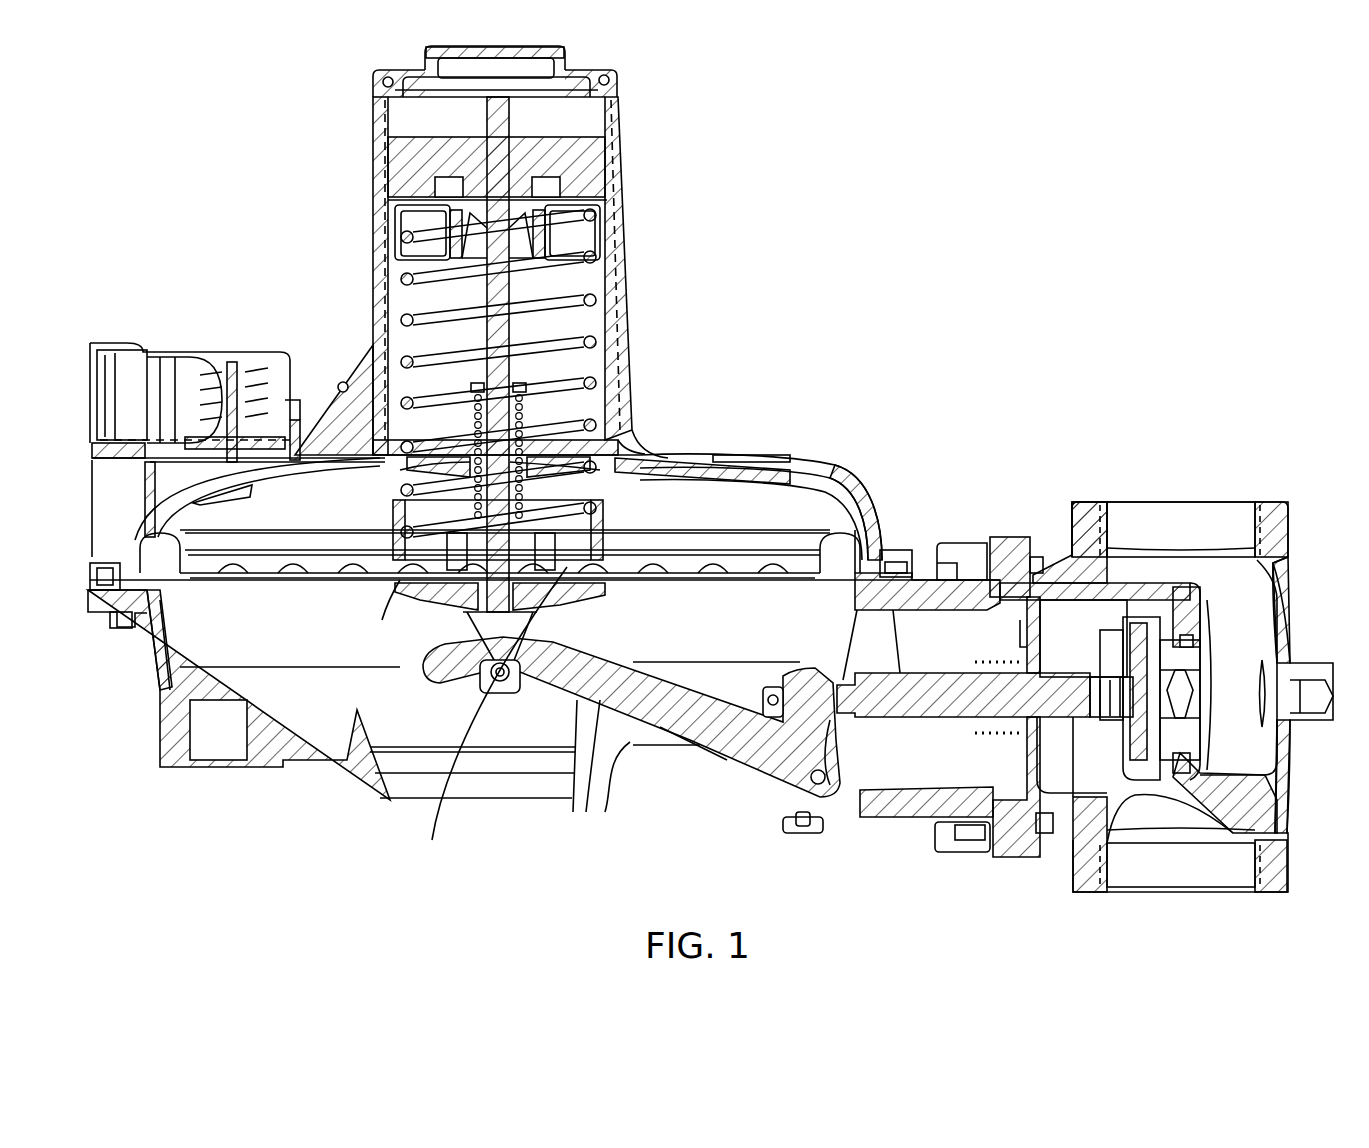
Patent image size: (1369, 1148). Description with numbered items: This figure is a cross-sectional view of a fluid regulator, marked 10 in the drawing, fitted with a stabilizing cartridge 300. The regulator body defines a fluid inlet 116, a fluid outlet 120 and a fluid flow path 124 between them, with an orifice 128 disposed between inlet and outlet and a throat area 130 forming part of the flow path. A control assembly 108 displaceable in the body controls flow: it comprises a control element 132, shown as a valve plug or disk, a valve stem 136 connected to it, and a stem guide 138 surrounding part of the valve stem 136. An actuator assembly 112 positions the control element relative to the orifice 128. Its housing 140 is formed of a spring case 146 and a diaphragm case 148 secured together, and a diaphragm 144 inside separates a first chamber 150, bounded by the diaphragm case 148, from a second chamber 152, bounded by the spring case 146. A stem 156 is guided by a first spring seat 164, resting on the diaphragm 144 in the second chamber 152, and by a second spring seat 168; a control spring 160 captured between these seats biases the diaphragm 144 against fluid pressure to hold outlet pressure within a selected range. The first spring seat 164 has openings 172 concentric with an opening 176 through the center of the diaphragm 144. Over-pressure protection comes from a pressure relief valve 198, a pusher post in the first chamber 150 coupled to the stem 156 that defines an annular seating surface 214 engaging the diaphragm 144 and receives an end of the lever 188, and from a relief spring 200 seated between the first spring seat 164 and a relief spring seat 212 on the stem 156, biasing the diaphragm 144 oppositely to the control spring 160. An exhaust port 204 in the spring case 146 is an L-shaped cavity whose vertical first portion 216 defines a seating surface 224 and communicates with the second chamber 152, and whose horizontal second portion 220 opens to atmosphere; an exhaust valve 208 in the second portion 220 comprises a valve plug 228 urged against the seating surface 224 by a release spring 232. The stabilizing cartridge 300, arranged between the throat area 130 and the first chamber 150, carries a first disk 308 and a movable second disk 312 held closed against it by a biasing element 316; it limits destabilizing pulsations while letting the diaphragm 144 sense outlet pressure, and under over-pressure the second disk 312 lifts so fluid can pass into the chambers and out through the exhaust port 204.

The fluid regulator 10 is at (1305, 604).
The control assembly 108 is at (954, 628).
The actuator assembly 112 is at (690, 412).
The fluid inlet 116 is at (1120, 502).
The fluid outlet 120 is at (1143, 892).
The fluid flow path 124 is at (1260, 656).
The orifice 128 is at (1190, 630).
The throat area 130 is at (1083, 647).
The control element 132 is at (1135, 625).
The valve stem 136 is at (918, 702).
The stem guide 138 is at (900, 677).
The housing 140 is at (150, 705).
The diaphragm 144 is at (782, 557).
The spring case 146 is at (632, 358).
The diaphragm case 148 is at (145, 632).
The first chamber 150 is at (320, 628).
The second chamber 152 is at (321, 523).
The stem 156 is at (525, 335).
The control spring 160 is at (590, 245).
The first spring seat 164 is at (733, 458).
The second spring seat 168 is at (600, 205).
The openings 172 is at (600, 580).
The opening 176 is at (490, 719).
The lever 188 is at (735, 745).
The pressure relief valve 198 is at (565, 665).
The relief spring 200 is at (473, 388).
The exhaust port 204 is at (134, 375).
The exhaust valve 208 is at (283, 390).
The relief spring seat 212 is at (470, 423).
The annular seating surface 214 is at (385, 614).
The first portion 216 is at (168, 385).
The second portion 220 is at (292, 408).
The seating surface 224 is at (143, 460).
The valve plug 228 is at (143, 505).
The release spring 232 is at (232, 372).
The stabilizer cartridge 300 is at (1008, 787).
The first disk 308 is at (1043, 833).
The second disk 312 is at (1025, 790).
The biasing element 316 is at (985, 725).